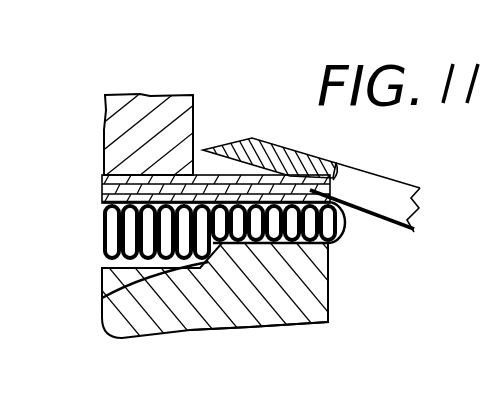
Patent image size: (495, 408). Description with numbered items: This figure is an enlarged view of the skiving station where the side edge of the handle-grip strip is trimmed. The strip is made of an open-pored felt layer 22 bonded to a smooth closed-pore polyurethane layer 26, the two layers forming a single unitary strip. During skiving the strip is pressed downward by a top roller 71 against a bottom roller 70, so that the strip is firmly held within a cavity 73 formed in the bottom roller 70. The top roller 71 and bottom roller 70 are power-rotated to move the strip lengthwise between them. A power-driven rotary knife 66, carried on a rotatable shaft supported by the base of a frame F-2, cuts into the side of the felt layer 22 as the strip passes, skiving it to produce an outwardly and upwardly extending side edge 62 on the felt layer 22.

The top roller 71 is at (108, 136).
The felt layer 22 is at (110, 181).
The polyurethane layer 26 is at (104, 240).
The cavity 73 is at (103, 298).
The bottom roller 70 is at (205, 328).
The frame F-2 is at (328, 285).
The rotary knife 66 is at (390, 195).
The side edge 62 is at (327, 177).